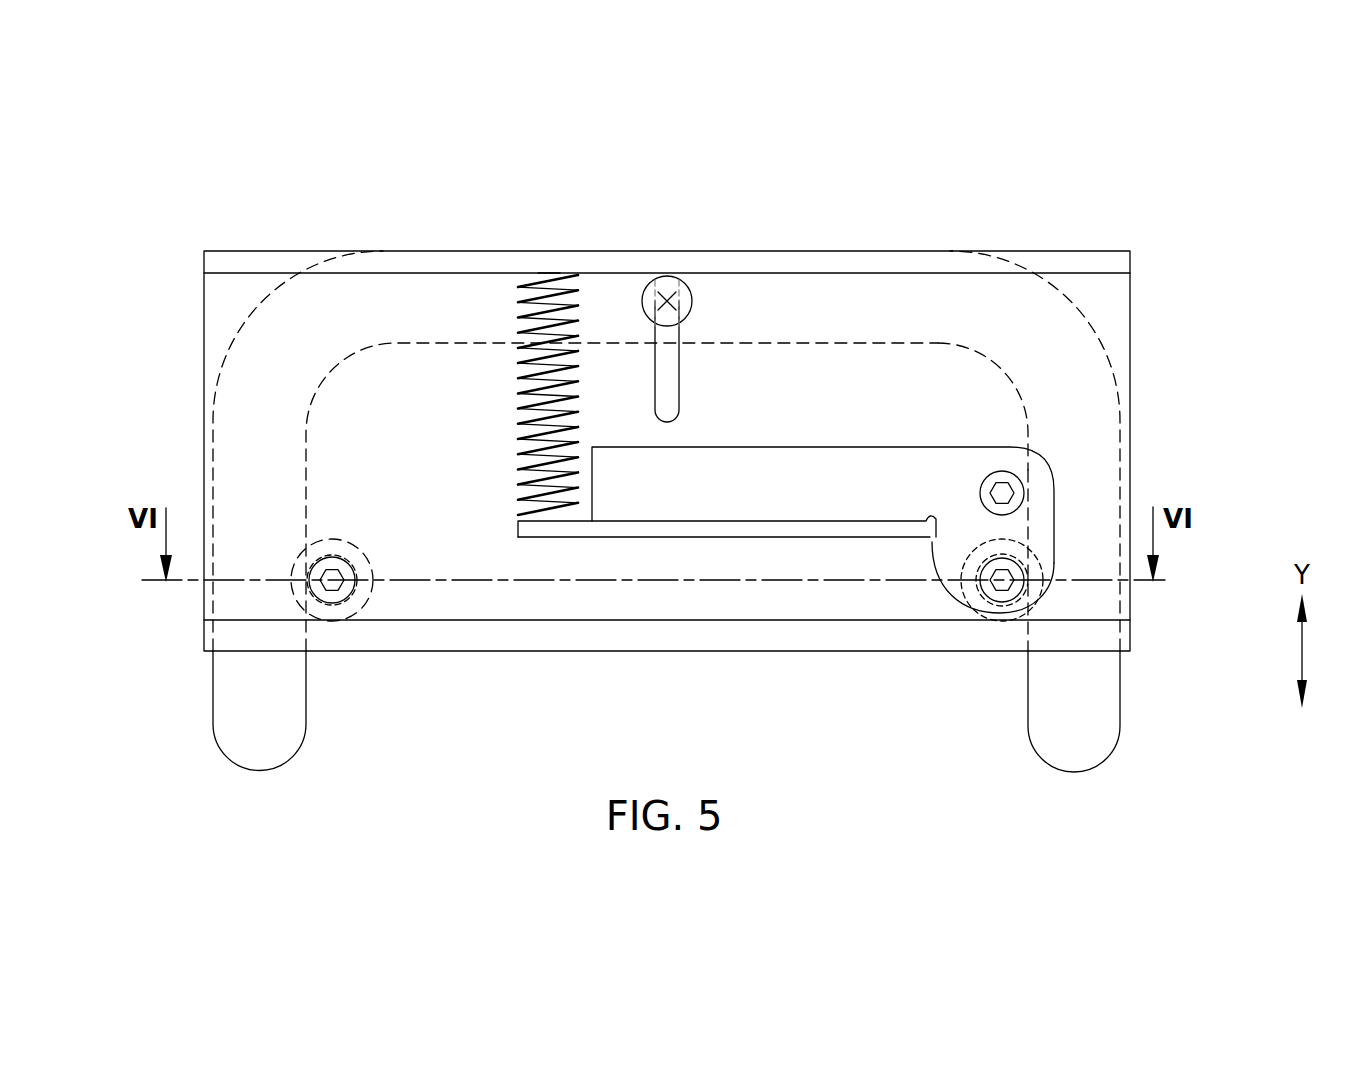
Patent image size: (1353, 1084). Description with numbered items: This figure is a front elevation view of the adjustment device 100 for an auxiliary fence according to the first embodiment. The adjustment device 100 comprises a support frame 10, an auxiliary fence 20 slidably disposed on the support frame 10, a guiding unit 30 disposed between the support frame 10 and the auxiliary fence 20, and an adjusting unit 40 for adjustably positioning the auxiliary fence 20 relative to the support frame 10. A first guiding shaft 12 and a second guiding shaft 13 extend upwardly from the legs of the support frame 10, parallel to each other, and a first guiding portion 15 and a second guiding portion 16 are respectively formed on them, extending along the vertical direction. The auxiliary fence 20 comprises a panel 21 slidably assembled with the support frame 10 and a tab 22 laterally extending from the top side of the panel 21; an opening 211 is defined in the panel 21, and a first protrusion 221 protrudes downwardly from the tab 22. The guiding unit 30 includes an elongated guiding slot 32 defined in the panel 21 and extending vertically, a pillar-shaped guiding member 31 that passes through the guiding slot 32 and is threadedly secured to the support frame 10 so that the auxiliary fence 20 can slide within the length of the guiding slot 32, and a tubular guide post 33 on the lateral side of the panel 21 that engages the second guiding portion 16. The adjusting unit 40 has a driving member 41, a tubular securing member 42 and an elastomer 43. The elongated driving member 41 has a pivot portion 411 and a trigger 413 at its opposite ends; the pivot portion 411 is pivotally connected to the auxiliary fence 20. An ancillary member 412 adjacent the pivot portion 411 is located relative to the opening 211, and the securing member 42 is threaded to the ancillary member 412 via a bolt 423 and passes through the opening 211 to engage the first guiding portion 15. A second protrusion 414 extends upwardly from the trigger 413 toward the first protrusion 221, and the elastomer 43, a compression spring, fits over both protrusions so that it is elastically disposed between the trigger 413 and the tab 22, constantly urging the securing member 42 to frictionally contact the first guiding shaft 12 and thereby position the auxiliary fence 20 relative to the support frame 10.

The adjustment device 100 is at (1040, 222).
The support frame 10 is at (1110, 752).
The first guiding shaft 12 is at (1093, 396).
The second guiding shaft 13 is at (262, 480).
The first guiding portion 15 is at (1028, 510).
The second guiding portion 16 is at (305, 473).
The auxiliary fence 20 is at (1131, 312).
The panel 21 is at (1112, 345).
The opening 211 is at (955, 585).
The tab 22 is at (1080, 260).
The first protrusion 221 is at (548, 272).
The guiding unit 30 is at (727, 274).
The guiding member 31 is at (683, 300).
The guiding slot 32 is at (668, 382).
The guide post 33 is at (366, 603).
The adjusting unit 40 is at (829, 597).
The driving member 41 is at (747, 521).
The pivot portion 411 is at (1010, 486).
The ancillary member 412 is at (960, 600).
The trigger 413 is at (530, 532).
The second protrusion 414 is at (538, 447).
The securing member 42 is at (1033, 600).
The bolt 423 is at (1003, 595).
The elastomer 43 is at (518, 385).